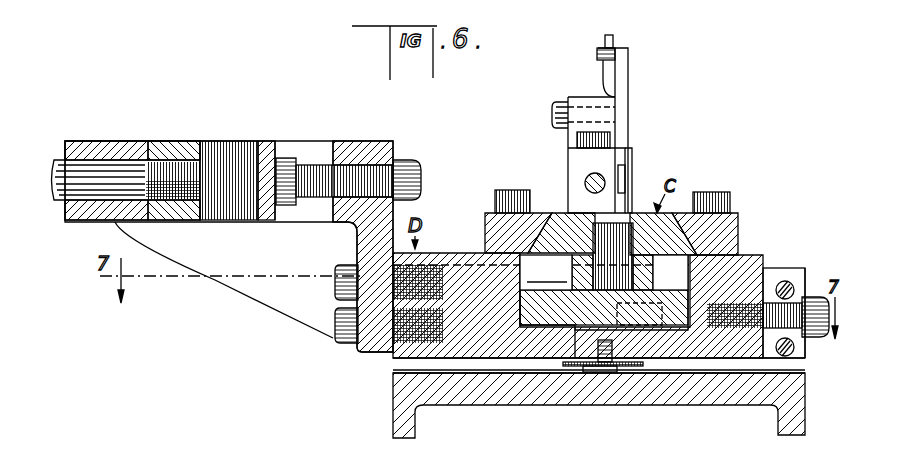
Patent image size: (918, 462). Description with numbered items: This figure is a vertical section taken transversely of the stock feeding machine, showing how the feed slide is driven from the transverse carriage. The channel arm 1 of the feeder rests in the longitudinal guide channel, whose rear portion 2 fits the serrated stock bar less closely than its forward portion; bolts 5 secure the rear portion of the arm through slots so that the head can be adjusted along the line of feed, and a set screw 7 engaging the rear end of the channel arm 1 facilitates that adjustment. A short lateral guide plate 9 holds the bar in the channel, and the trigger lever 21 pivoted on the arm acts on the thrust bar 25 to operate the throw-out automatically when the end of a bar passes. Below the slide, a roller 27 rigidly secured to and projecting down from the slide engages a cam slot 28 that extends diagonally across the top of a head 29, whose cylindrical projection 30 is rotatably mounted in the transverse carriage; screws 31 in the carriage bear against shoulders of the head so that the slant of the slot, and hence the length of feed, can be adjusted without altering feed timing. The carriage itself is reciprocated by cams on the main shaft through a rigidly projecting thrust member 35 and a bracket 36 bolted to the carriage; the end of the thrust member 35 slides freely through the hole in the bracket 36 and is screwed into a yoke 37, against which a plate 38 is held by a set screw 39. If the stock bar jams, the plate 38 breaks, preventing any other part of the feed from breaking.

The channel arm 1 is at (570, 156).
The rear portion of guide channel 2 is at (625, 178).
The bolts 5 is at (610, 140).
The set screw 7 is at (585, 183).
The lateral guide plate 9 is at (632, 158).
The trigger lever 21 is at (629, 60).
The thrust bar 25 is at (613, 38).
The roller 27 is at (640, 277).
The cam slot 28 is at (545, 272).
The head 29 is at (545, 322).
The cylindrical projection 30 is at (587, 343).
The screws 31 is at (820, 333).
The thrust member 35 is at (88, 170).
The bracket 36 is at (132, 145).
The yoke 37 is at (230, 143).
The plate 38 is at (265, 145).
The set screw 39 is at (308, 172).